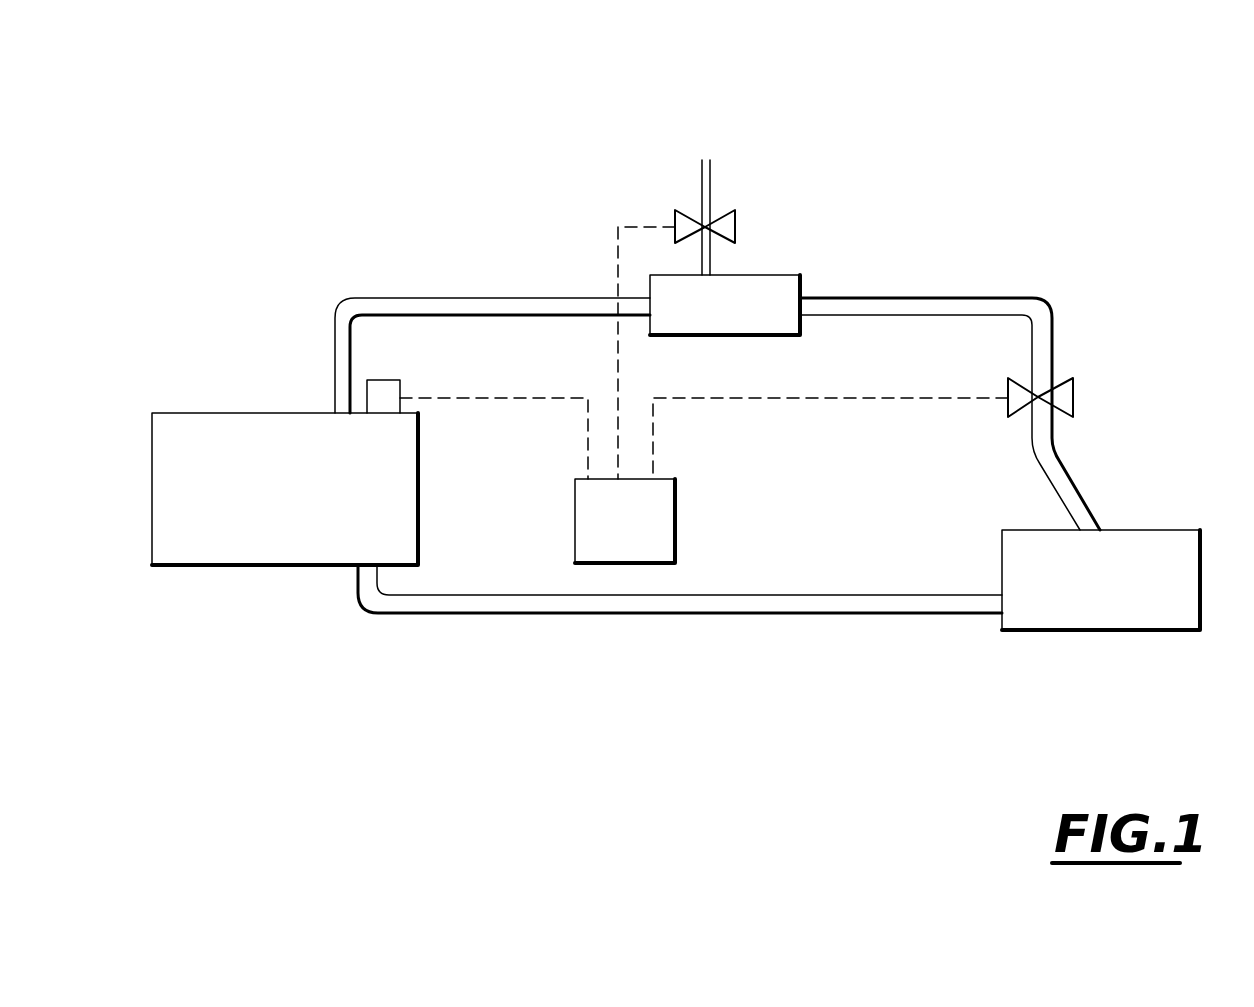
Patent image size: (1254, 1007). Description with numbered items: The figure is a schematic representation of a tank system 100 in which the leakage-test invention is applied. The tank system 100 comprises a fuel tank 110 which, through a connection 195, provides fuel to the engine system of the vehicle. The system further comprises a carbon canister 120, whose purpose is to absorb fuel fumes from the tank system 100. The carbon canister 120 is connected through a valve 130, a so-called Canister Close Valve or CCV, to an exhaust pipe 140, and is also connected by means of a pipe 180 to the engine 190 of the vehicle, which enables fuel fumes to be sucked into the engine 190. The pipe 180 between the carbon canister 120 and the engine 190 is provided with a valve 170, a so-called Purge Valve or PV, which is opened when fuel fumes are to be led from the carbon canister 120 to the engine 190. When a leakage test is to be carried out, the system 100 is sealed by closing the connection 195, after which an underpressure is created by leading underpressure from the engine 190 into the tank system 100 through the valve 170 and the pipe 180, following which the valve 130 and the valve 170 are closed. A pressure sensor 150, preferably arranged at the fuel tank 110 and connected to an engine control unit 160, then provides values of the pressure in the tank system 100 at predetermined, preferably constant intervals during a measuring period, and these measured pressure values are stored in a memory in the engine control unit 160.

The tank system 100 is at (1047, 148).
The fuel tank 110 is at (190, 412).
The carbon canister 120 is at (732, 283).
The valve (Canister Close Valve, CCV) 130 is at (727, 222).
The exhaust pipe 140 is at (706, 180).
The pressure sensor 150 is at (380, 385).
The engine control unit 160 is at (630, 548).
The valve (Purge Valve, PV) 170 is at (1067, 395).
The pipe 180 is at (1050, 463).
The engine 190 is at (1113, 538).
The connection 195 is at (740, 605).